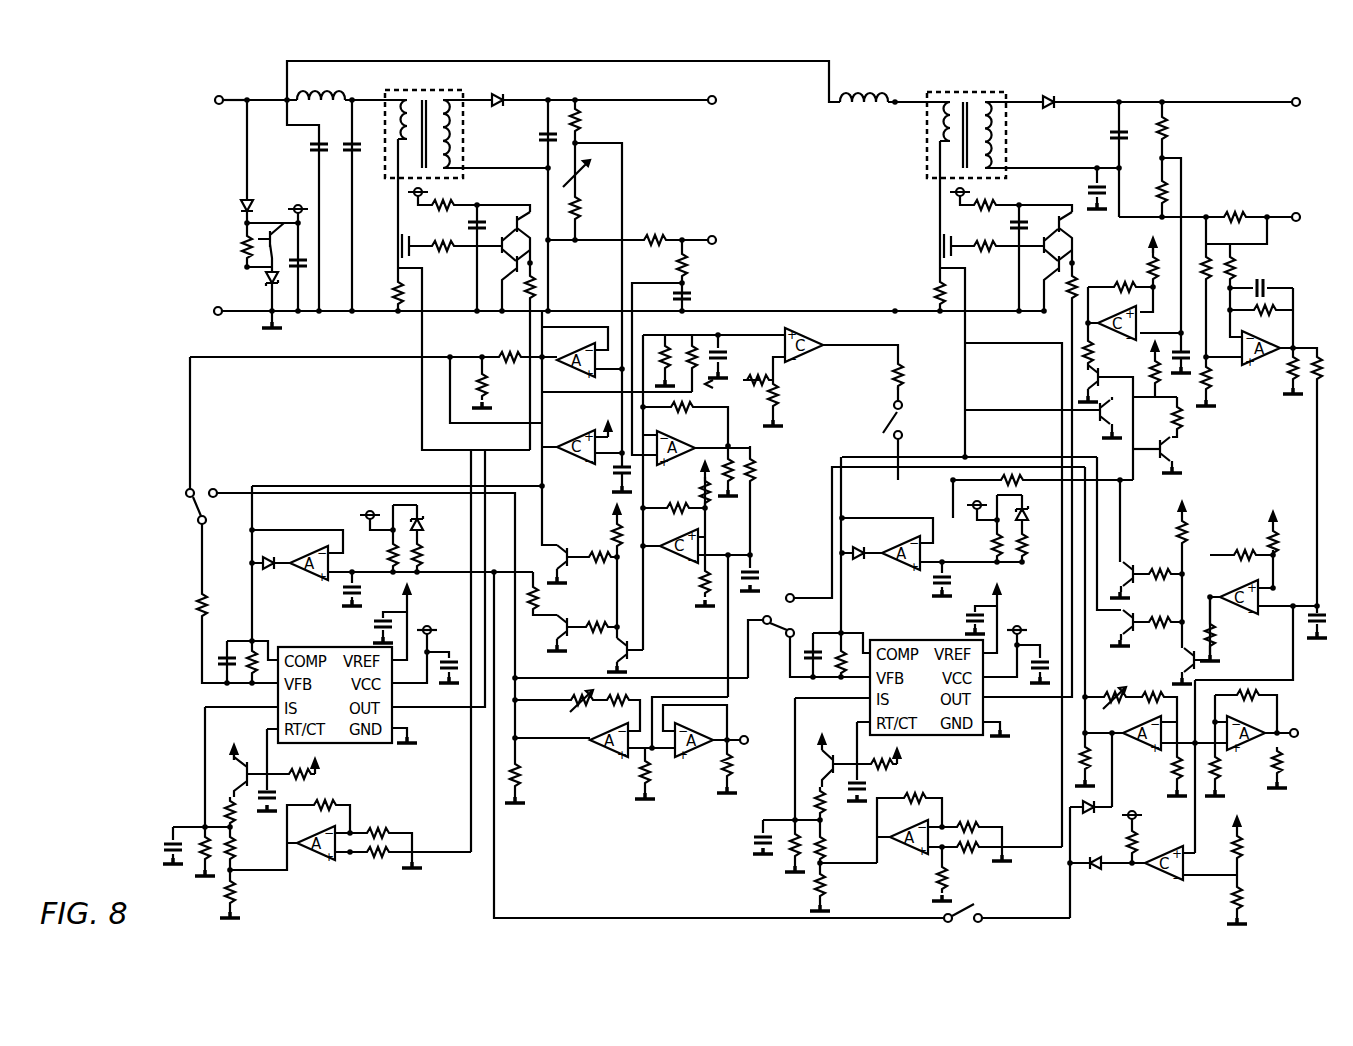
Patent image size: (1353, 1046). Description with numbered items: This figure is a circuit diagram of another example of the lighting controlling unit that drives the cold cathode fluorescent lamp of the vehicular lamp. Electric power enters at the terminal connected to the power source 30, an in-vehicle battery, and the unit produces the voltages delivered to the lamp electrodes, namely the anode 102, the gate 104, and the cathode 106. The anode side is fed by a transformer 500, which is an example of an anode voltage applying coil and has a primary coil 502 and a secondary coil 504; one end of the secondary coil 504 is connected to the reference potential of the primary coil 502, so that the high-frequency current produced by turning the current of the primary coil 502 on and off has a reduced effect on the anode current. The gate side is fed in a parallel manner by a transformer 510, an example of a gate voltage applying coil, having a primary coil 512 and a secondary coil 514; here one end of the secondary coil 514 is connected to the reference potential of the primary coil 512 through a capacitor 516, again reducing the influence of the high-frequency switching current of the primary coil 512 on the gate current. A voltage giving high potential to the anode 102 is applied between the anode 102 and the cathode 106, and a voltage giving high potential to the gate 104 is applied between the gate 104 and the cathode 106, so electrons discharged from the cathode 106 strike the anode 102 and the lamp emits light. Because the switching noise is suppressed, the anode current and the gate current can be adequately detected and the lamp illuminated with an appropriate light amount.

The power source 30 is at (216, 101).
The anode 102 is at (733, 101).
The gate 104 is at (1316, 103).
The cathode 106 is at (1024, 230).
The transformer 500 is at (465, 136).
The primary coil 502 is at (407, 88).
The secondary coil 504 is at (441, 99).
The transformer 510 is at (1005, 136).
The primary coil 512 is at (949, 92).
The secondary coil 514 is at (987, 92).
The capacitor 516 is at (1082, 185).